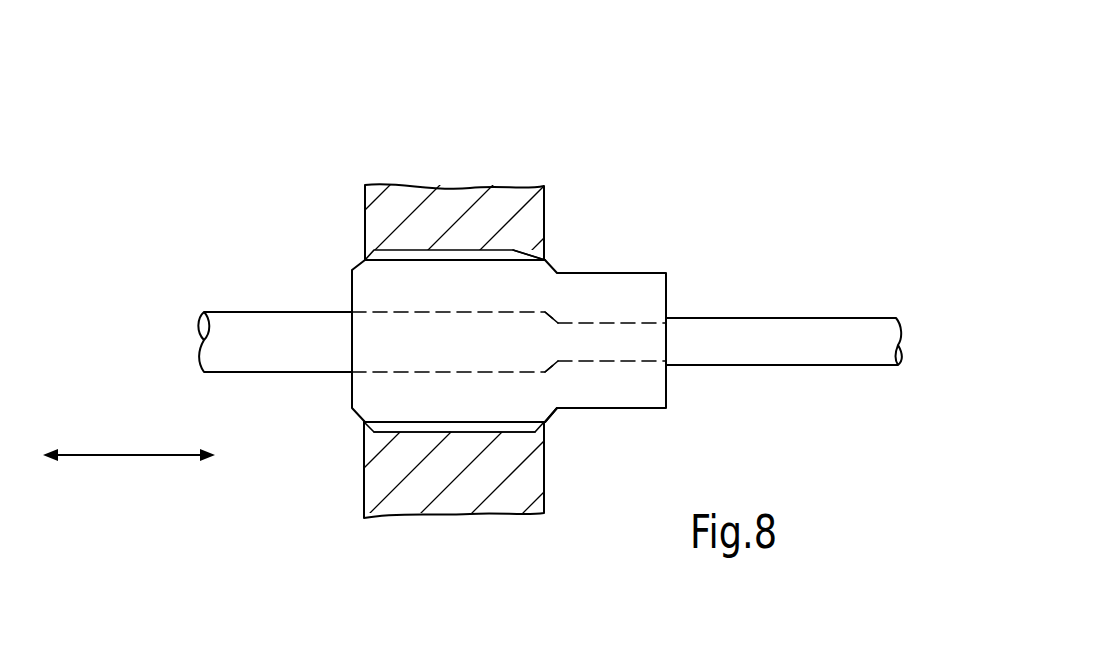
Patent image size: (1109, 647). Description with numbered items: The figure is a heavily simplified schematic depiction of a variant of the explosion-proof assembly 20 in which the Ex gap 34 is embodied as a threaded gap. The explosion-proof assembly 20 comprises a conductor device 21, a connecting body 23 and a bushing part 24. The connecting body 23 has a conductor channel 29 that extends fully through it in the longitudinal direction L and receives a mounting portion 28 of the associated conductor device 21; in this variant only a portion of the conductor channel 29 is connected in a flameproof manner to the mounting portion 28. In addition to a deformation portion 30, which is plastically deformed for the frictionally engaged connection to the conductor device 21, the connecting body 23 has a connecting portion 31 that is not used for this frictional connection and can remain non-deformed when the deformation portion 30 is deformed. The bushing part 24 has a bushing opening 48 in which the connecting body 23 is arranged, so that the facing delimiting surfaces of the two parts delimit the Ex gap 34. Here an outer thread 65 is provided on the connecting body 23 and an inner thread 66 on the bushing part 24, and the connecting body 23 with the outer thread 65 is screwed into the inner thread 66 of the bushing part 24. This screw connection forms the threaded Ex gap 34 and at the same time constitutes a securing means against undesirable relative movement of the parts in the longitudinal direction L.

The explosion-proof assembly 20 is at (770, 163).
The conductor device 21 is at (877, 333).
The connecting body 23 is at (297, 262).
The bushing part 24 is at (450, 207).
The mounting portion 28 is at (623, 347).
The conductor channel 29 is at (648, 323).
The deformation portion 30 is at (647, 285).
The connecting portion 31 is at (393, 282).
The Ex gap 34 is at (562, 420).
The bushing opening 48 is at (464, 428).
The outer thread 65 is at (412, 442).
The inner thread 66 is at (519, 259).
The longitudinal direction L is at (135, 457).